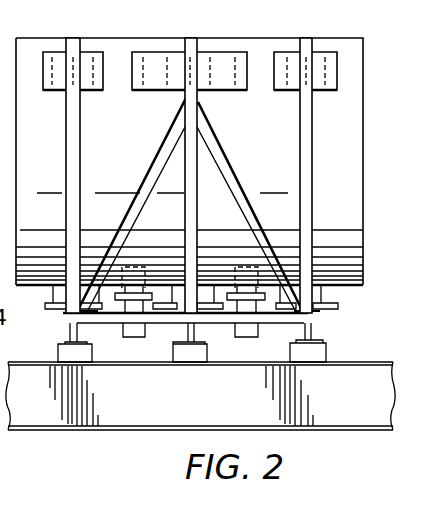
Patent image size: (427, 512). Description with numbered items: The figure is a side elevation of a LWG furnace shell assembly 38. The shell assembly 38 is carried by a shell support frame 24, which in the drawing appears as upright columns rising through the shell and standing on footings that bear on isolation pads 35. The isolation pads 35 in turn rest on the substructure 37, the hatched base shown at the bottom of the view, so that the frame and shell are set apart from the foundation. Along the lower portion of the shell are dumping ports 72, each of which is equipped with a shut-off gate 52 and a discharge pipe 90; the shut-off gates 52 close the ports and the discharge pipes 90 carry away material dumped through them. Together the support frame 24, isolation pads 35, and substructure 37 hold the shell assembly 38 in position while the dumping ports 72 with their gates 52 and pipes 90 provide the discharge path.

The shell support frame 24 is at (358, 193).
The isolation pads 35 is at (326, 347).
The substructure 37 is at (353, 403).
The LWG furnace shell assembly 38 is at (363, 151).
The shut-off gates 52 is at (116, 294).
The dumping ports 72 is at (232, 268).
The discharge pipes 90 is at (143, 335).